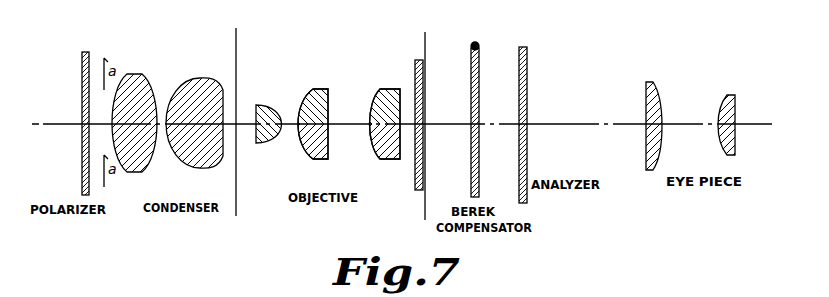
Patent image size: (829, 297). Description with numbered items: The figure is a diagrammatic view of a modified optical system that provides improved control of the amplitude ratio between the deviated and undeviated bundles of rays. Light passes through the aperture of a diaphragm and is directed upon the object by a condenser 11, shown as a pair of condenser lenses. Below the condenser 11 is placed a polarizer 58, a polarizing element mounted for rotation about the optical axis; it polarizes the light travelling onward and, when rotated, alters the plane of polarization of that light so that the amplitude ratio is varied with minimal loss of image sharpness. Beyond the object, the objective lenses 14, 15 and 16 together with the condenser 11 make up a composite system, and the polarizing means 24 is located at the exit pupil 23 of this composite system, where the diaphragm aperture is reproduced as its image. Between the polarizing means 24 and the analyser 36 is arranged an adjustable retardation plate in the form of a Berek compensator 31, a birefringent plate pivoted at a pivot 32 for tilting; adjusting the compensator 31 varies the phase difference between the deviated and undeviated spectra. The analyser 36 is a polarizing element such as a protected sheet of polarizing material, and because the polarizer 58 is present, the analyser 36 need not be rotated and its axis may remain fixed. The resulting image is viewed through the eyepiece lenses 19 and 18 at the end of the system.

The polarizer 58 is at (85, 51).
The condenser 11 is at (183, 92).
The objective lens 14 is at (260, 104).
The objective lens 15 is at (313, 90).
The objective lens 16 is at (379, 92).
The polarizing means 24 is at (417, 59).
The exit pupil 23 is at (426, 44).
The Berek compensator 31 is at (470, 78).
The pivot 32 is at (477, 45).
The analyser 36 is at (528, 51).
The eyepiece lens 19 is at (655, 84).
The eyepiece lens 18 is at (734, 96).